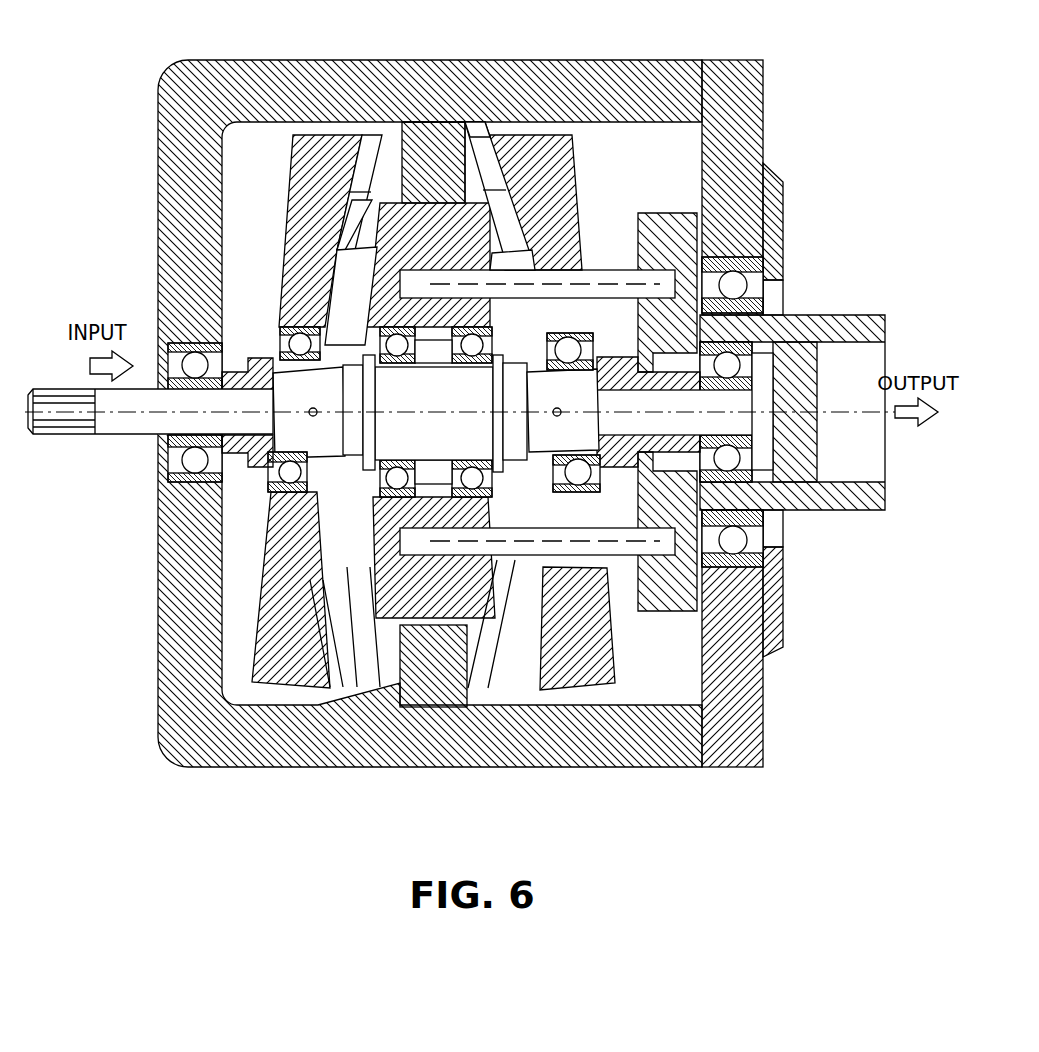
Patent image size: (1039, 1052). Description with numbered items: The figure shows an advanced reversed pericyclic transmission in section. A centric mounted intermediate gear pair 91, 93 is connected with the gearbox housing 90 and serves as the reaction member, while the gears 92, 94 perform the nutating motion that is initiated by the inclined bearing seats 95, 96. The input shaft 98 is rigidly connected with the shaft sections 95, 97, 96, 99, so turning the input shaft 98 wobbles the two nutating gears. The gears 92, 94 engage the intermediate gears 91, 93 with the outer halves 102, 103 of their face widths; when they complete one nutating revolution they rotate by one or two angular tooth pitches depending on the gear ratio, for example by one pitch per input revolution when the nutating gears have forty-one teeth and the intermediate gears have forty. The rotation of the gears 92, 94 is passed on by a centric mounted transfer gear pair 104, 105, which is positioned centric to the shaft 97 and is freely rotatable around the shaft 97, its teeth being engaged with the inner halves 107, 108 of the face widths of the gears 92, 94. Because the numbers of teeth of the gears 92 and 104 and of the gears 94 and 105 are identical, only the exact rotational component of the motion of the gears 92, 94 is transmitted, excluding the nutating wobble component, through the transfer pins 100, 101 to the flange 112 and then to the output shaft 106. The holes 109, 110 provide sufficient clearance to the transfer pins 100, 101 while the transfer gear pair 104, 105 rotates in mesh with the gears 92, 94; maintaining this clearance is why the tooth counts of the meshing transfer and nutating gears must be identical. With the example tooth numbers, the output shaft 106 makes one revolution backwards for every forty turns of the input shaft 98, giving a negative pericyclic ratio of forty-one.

The gearbox housing 90 is at (188, 210).
The intermediate gear 91 is at (408, 150).
The nutating gear 92 is at (310, 203).
The intermediate gear 93 is at (462, 165).
The nutating gear 94 is at (540, 178).
The inclined bearing seat 95 is at (285, 470).
The inclined bearing seat 96 is at (540, 447).
The shaft section 97 is at (400, 395).
The input shaft 98 is at (130, 428).
The shaft section 99 is at (760, 440).
The transfer pin 100 is at (620, 285).
The transfer pin 101 is at (613, 550).
The outer half of face width 102 is at (368, 163).
The outer half of face width 103 is at (478, 140).
The transfer gear 104 is at (382, 232).
The transfer gear 105 is at (490, 255).
The output shaft 106 is at (845, 315).
The inner half of face width 107 is at (360, 230).
The inner half of face width 108 is at (505, 218).
The hole 109 is at (565, 265).
The hole 110 is at (603, 520).
The flange 112 is at (665, 235).